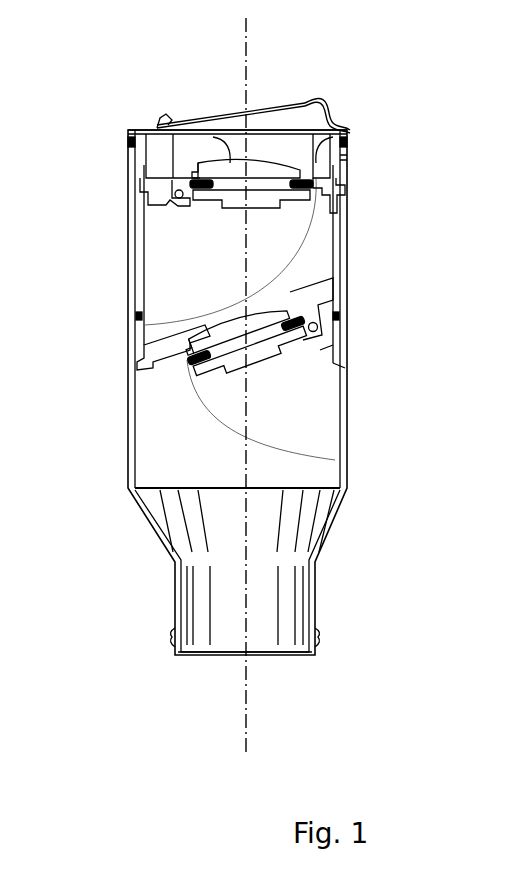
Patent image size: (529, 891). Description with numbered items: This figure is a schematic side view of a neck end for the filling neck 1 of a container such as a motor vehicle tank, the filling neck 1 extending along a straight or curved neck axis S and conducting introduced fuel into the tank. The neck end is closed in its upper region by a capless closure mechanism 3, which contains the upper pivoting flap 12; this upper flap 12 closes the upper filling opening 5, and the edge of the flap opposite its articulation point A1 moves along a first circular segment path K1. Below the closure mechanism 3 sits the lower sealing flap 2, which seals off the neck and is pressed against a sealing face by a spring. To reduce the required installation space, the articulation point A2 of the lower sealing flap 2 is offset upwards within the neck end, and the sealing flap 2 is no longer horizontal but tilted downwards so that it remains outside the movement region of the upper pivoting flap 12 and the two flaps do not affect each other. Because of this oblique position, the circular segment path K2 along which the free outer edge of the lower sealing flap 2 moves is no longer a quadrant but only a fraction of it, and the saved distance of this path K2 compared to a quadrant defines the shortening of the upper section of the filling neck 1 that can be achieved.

The filling neck 1 is at (180, 512).
The lower sealing flap 2 is at (283, 350).
The capless closure mechanism 3 is at (178, 100).
The upper filling opening 5 is at (313, 117).
The upper pivoting flap 12 is at (282, 197).
The articulation point A1 is at (176, 196).
The articulation point of the lower sealing flap A2 is at (318, 327).
The first circular segment path K1 is at (313, 218).
The circular segment path K2 is at (330, 462).
The neck axis S is at (248, 67).